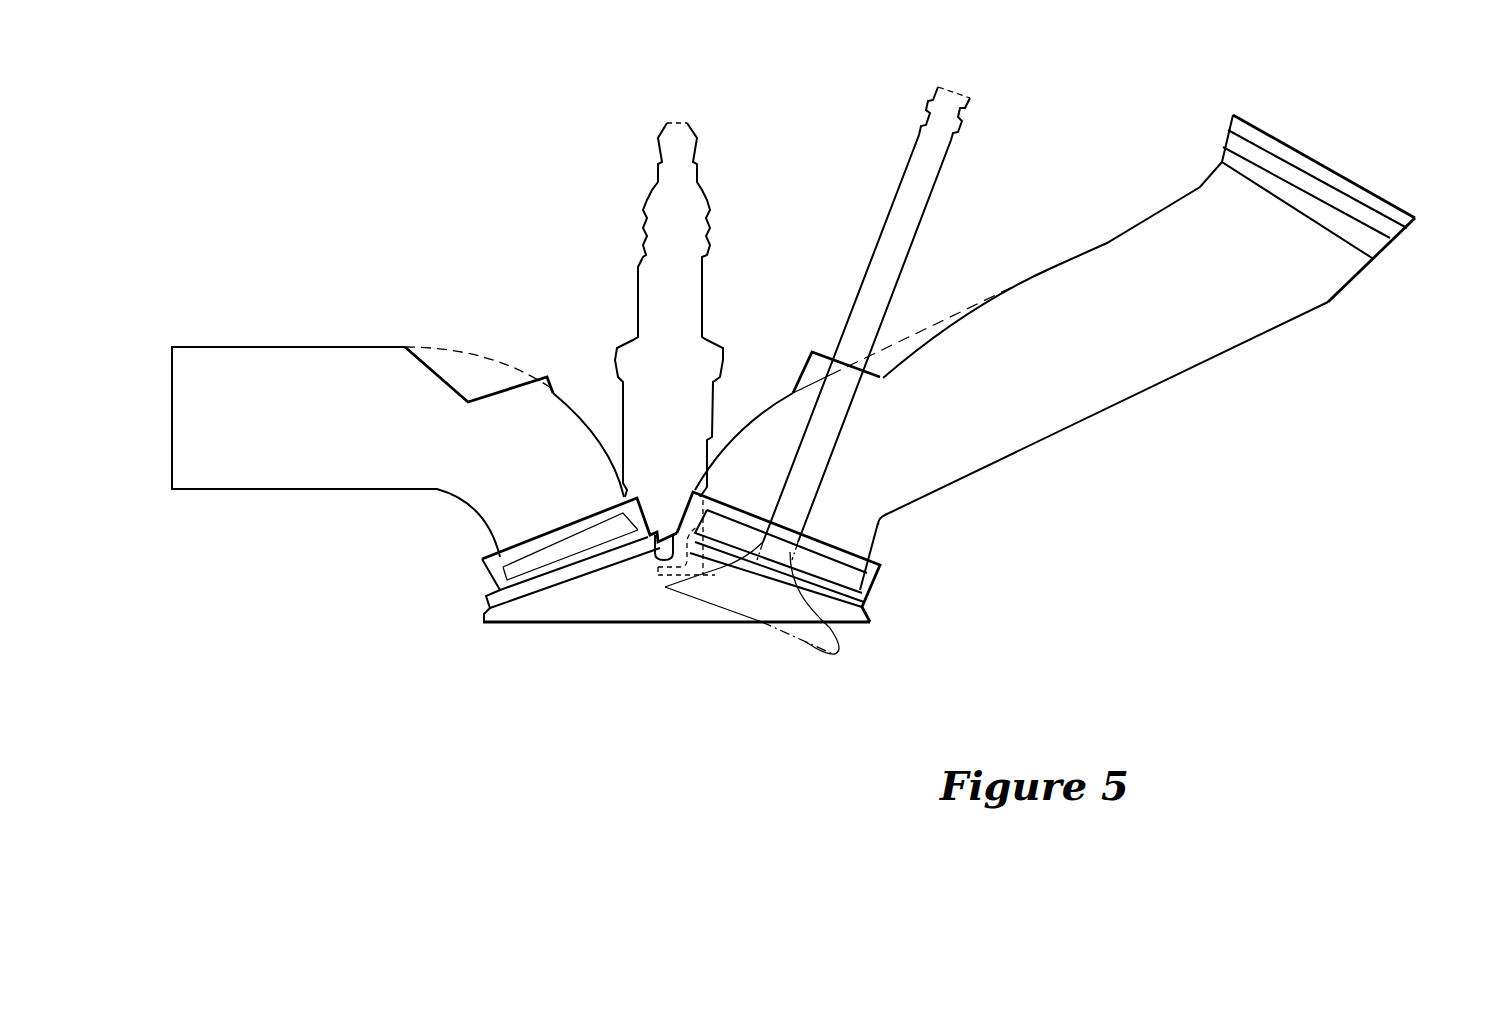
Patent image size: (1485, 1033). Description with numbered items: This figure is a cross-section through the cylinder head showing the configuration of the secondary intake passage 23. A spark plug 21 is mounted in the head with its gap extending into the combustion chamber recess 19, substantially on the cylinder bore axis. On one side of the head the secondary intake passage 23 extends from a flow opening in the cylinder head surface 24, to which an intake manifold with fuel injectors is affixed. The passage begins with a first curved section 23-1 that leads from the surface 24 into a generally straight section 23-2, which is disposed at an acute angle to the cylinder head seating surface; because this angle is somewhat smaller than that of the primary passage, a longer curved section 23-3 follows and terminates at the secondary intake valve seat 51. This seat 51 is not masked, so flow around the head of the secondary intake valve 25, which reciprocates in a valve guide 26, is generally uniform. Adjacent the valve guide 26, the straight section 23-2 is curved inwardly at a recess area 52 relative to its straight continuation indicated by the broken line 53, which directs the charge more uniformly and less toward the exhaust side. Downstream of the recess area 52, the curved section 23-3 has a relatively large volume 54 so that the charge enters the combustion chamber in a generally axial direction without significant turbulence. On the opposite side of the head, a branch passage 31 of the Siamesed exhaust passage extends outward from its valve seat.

The combustion chamber recess 19 is at (618, 602).
The spark plug 21 is at (638, 282).
The secondary intake passage 23 is at (1163, 376).
The first curved section 23-1 is at (1385, 240).
The straight section 23-2 is at (1165, 367).
The curved section 23-3 is at (857, 540).
The cylinder head surface 24 is at (1317, 162).
The secondary intake valve 25 is at (770, 625).
The valve guide 26 is at (837, 372).
The branch passage 31 is at (283, 487).
The secondary intake valve seat 51 is at (868, 582).
The recess area 52 is at (933, 343).
The broken line 53 is at (955, 313).
The relatively large volume 54 is at (730, 462).